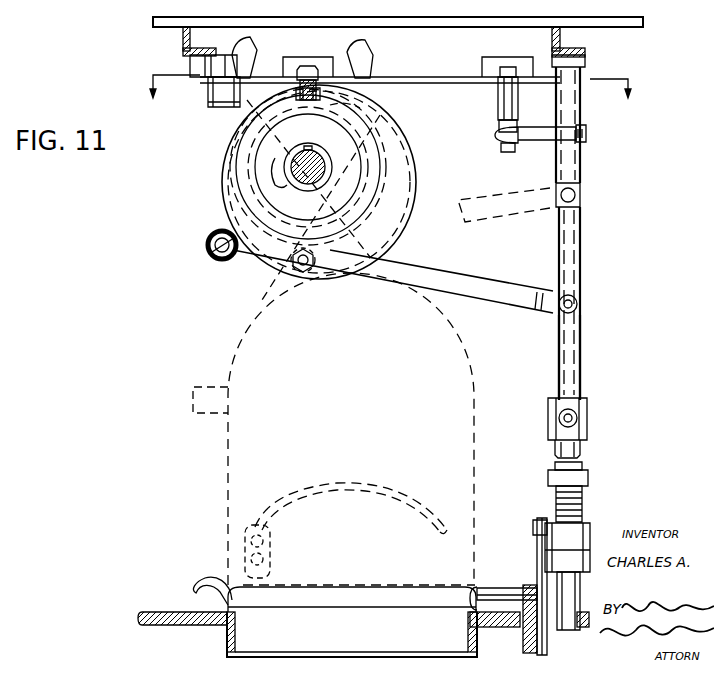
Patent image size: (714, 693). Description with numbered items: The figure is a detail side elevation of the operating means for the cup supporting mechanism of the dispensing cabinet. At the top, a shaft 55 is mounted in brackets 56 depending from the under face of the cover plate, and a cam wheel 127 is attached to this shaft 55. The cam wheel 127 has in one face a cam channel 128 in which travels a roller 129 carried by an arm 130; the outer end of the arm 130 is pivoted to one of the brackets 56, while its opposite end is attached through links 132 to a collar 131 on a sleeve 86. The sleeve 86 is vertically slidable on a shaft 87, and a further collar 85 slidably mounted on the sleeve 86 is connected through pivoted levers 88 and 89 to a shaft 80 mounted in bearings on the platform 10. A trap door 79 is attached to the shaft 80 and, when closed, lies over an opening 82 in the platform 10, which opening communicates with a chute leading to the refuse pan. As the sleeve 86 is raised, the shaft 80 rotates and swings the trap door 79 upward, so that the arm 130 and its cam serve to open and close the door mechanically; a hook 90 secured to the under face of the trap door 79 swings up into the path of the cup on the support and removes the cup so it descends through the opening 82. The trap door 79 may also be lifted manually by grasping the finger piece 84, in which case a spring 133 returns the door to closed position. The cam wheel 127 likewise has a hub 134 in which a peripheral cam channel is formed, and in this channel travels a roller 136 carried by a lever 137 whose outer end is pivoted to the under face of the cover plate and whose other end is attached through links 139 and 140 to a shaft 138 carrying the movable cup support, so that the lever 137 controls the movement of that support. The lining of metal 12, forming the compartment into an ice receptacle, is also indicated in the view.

The platform 10 is at (163, 618).
The lining of metal 12 is at (393, 88).
The shaft 55 is at (292, 167).
The brackets 56 is at (231, 213).
The trap door 79 is at (322, 592).
The shaft 80 is at (485, 597).
The opening 82 is at (352, 634).
The finger piece 84 is at (218, 572).
The collar 85 is at (590, 535).
The sleeve 86 is at (580, 450).
The shaft 87 is at (578, 247).
The pivoted lever 88 is at (532, 623).
The pivoted lever 89 is at (538, 553).
The hook 90 is at (310, 488).
The cam wheel 127 is at (417, 168).
The cam channel 128 is at (395, 128).
The roller 129 is at (300, 267).
The arm 130 is at (472, 283).
The collar 131 is at (583, 417).
The links 132 is at (570, 353).
The spring 133 is at (570, 500).
The hub 134 is at (358, 205).
The roller 136 is at (265, 100).
The lever 137 is at (433, 83).
The shaft 138 is at (580, 165).
The link 139 is at (513, 107).
The link 140 is at (537, 132).